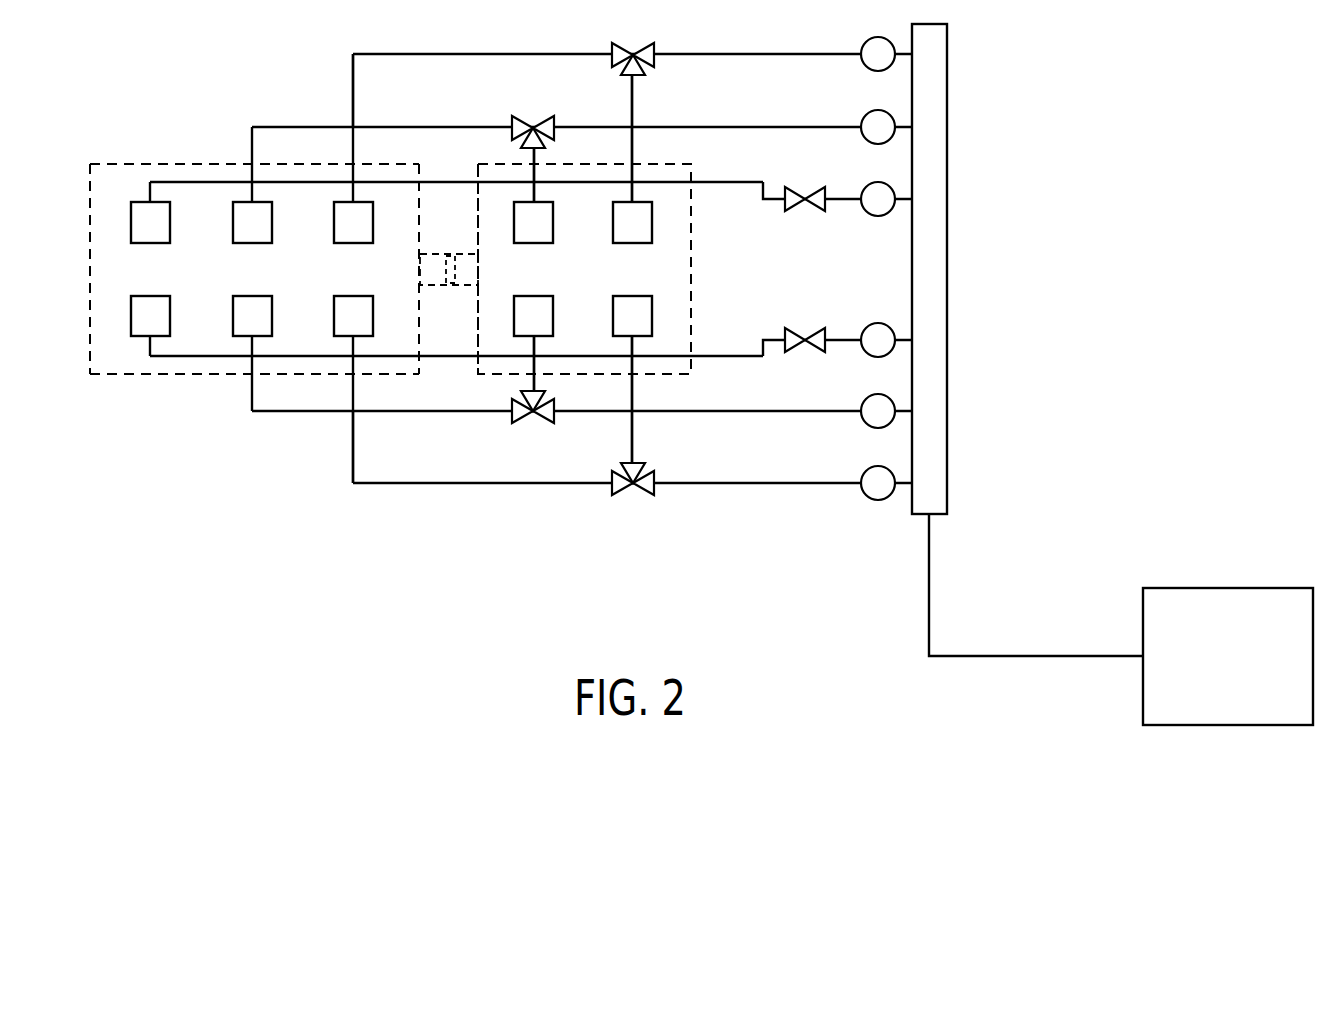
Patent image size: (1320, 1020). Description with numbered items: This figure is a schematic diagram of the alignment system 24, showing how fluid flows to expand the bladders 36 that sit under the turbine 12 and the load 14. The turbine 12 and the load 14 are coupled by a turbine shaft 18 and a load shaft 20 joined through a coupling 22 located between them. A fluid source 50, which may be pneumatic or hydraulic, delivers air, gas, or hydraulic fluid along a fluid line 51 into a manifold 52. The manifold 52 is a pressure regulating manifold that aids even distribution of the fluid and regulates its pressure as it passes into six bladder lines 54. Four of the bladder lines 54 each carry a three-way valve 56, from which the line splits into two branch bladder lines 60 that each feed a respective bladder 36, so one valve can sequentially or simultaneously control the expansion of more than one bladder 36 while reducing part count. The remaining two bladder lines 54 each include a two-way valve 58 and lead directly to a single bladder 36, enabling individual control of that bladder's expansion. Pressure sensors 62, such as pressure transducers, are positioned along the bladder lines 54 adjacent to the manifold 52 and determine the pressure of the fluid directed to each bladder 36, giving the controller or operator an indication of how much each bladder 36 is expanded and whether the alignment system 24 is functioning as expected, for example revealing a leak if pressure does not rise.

The turbine 12 is at (178, 164).
The load 14 is at (691, 268).
The turbine shaft 18 is at (432, 252).
The load shaft 20 is at (473, 287).
The coupling 22 is at (447, 254).
The alignment system 24 is at (1158, 153).
The bladders 36 is at (150, 243).
The fluid source 50 is at (1228, 588).
The fluid line 51 is at (1037, 657).
The manifold 52 is at (947, 74).
The bladder lines 54 is at (758, 54).
The three-way valves 56 is at (630, 43).
The two-way valves 58 is at (795, 210).
The branch bladder lines 60 is at (455, 54).
The pressure sensors 62 is at (878, 71).